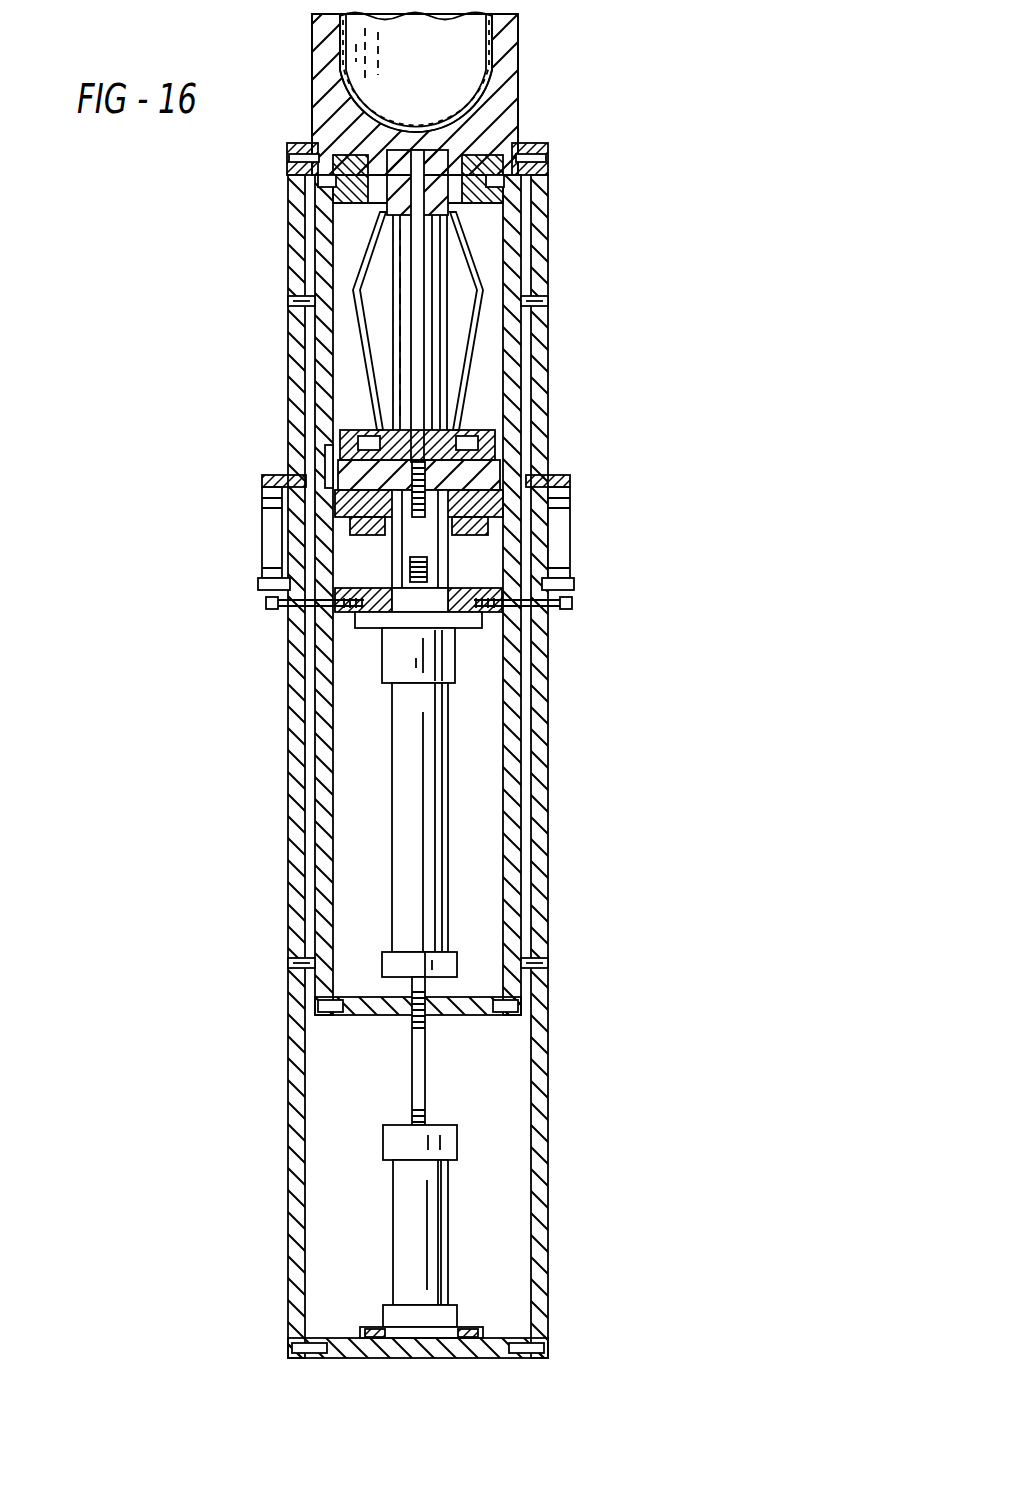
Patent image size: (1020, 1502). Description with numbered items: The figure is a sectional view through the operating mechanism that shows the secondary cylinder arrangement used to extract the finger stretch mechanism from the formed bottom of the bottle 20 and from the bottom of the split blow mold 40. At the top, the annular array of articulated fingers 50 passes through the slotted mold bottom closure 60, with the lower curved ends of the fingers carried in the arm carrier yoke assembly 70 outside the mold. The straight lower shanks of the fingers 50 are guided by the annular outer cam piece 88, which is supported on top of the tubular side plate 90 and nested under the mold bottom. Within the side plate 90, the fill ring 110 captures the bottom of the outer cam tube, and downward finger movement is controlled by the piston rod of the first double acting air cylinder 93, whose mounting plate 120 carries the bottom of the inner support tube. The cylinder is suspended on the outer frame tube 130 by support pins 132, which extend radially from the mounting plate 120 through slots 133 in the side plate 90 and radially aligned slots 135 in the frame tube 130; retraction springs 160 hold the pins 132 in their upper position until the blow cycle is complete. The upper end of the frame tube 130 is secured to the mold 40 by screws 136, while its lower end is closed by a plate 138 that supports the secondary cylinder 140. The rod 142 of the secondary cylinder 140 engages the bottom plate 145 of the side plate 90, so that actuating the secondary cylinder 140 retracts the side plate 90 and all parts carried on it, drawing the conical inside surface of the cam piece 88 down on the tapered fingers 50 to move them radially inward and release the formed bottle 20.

The bottle 20 is at (515, 42).
The split blow mold 40 is at (513, 103).
The screws 136 is at (548, 155).
The annular outer cam piece 88 is at (465, 203).
The slotted mold bottom plug or closure 60 is at (397, 193).
The articulated fingers 50 is at (365, 252).
The arm carrier yoke assembly 70 is at (478, 422).
The outer frame tube 130 is at (537, 420).
The fill ring 110 is at (518, 458).
The retraction springs 160 is at (570, 537).
The slots 133 is at (574, 580).
The support pins 132 is at (548, 616).
The slots 135 is at (522, 640).
The cylinder mounting plate 120 is at (487, 622).
The tubular side plate 90 is at (514, 778).
The first double acting air cylinder 93 is at (396, 820).
The bottom plate 145 is at (378, 1018).
The rod 142 is at (428, 1080).
The secondary cylinder 140 is at (440, 1218).
The plate 138 is at (500, 1338).